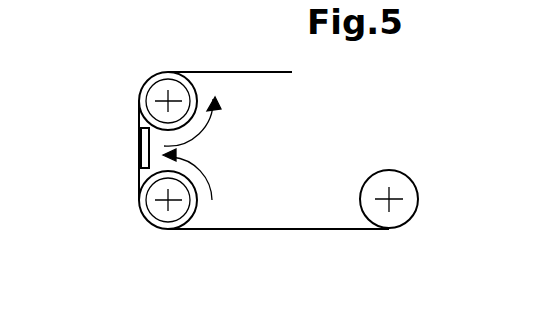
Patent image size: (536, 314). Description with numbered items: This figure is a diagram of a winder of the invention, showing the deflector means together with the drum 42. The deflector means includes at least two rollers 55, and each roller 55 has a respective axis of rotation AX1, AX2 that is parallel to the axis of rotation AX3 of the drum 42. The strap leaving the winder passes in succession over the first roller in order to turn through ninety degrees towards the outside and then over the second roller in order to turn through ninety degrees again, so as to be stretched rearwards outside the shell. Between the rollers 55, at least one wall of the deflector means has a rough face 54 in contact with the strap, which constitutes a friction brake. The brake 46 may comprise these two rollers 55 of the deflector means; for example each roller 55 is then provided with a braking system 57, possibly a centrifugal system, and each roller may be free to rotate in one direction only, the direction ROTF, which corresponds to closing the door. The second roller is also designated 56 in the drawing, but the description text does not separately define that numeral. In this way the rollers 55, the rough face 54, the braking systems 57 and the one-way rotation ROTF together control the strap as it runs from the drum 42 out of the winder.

The braking system 57 is at (197, 97).
The rollers 55 is at (120, 133).
The brake 46 is at (158, 78).
The second deflection roller 56 is at (140, 208).
The rough face 54 is at (140, 133).
The drum 42 is at (415, 220).
The axis of rotation AX1 is at (165, 100).
The axis of rotation AX2 is at (166, 199).
The axis of rotation AX3 is at (391, 195).
The direction of rotation ROTF is at (224, 151).